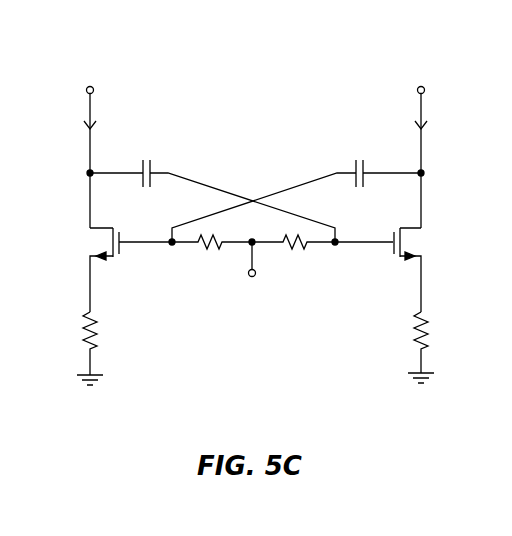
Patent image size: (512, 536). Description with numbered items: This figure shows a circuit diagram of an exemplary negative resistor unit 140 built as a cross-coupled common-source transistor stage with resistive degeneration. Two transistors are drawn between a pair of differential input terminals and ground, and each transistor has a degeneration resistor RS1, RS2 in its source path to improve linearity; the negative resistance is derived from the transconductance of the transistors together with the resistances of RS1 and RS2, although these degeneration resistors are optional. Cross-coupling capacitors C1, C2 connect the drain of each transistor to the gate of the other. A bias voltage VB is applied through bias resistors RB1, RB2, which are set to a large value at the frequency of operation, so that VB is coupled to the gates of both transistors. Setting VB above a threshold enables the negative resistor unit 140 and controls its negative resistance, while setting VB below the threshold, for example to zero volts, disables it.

The negative resistor unit 140 is at (334, 64).
The capacitor C1 is at (212, 194).
The capacitor C2 is at (296, 194).
The bias resistor RB1 is at (207, 255).
The bias resistor RB2 is at (294, 255).
The degeneration resistor RS1 is at (107, 343).
The degeneration resistor RS2 is at (400, 342).
The bias voltage VB is at (246, 272).